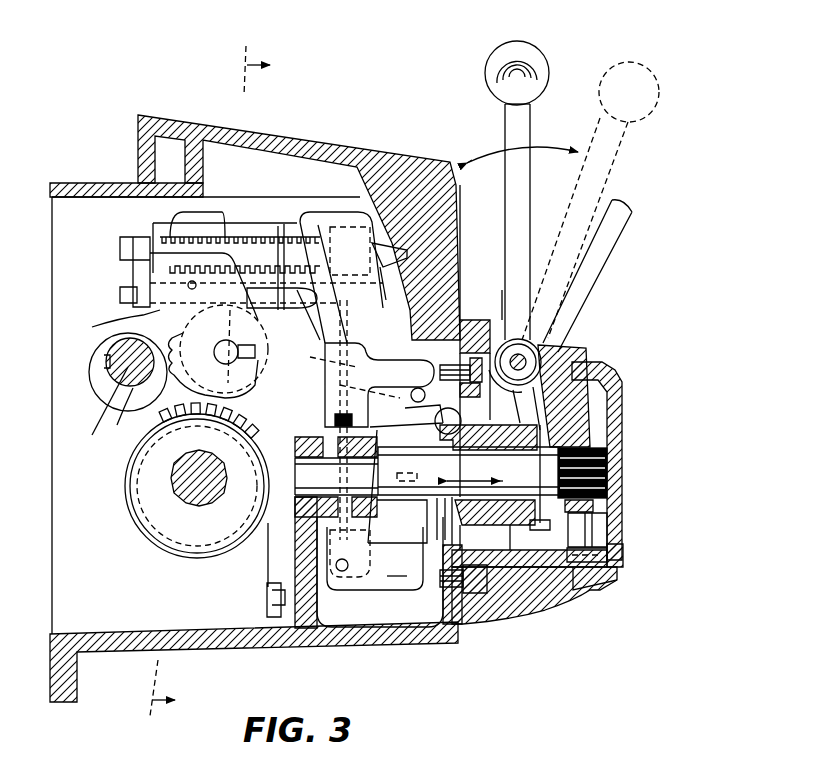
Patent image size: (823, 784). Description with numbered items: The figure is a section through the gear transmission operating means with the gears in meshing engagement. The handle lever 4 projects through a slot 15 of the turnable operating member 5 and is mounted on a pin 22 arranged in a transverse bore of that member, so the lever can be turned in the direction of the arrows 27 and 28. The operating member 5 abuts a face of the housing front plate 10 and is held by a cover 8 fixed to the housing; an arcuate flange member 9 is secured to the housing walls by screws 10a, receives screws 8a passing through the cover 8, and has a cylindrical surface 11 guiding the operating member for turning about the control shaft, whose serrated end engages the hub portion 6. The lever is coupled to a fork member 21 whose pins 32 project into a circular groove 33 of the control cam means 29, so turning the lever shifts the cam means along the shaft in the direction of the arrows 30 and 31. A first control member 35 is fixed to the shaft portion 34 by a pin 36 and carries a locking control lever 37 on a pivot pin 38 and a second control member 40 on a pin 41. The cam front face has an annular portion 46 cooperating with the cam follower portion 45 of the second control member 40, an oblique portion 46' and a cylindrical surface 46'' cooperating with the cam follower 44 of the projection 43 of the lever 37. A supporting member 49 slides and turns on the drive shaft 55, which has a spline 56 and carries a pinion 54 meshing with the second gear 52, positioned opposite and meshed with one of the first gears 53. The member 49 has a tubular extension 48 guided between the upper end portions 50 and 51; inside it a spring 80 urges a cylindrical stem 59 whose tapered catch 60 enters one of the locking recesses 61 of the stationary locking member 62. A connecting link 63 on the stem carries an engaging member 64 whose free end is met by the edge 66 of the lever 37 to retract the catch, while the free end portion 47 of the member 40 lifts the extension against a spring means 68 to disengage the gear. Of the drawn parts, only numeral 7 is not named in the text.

The handle lever 4 is at (553, 192).
The arrow 27 is at (563, 201).
The arrow 28 is at (456, 148).
The slot 15 is at (575, 334).
The pin 22 is at (528, 360).
The housing front plate 10 is at (449, 273).
The screws 10a is at (441, 594).
The cylindrical surface 11 is at (467, 338).
The locking recesses 61 is at (407, 254).
The catch 60 is at (386, 275).
The fork member 21 is at (622, 420).
The control cam means 29 is at (481, 454).
The second control member 40 is at (420, 454).
The portion of control shaft 34 is at (324, 486).
The arrow 30 is at (460, 483).
The arrow 31 is at (513, 483).
The pin 41 is at (414, 421).
The spring 7 is at (607, 470).
The hub portion 6 is at (593, 508).
The circular groove 33 is at (607, 522).
The pins 32 is at (542, 529).
The arcuate flange member 9 is at (497, 565).
The operating member 5 is at (570, 608).
The cover 8 is at (601, 581).
The screws 8a is at (623, 552).
The locking control lever 37 is at (374, 343).
The cam follower projection 43 is at (448, 421).
The cam follower 44 is at (463, 416).
The pin 36 is at (334, 418).
The tubular extension 48 is at (287, 224).
The spring 80 is at (240, 223).
The cylindrical stem 59 is at (266, 285).
The upper end portion 50 is at (281, 226).
The upper end portion 51 is at (313, 212).
The free end portion 47 is at (304, 322).
The stationary locking member 62 is at (385, 316).
The edge 66 is at (320, 320).
The connecting link 63 is at (130, 265).
The engaging member 64 is at (127, 288).
The second gear 52 is at (219, 351).
The spline 56 is at (106, 364).
The drive shaft 55 is at (94, 420).
The pinion 54 is at (118, 412).
The supporting member 49 is at (92, 327).
The first gears 53 is at (162, 486).
The spring means 68 is at (266, 579).
The pivot pin 38 is at (355, 555).
The first control member 35 is at (396, 567).
The cam follower portion 45 is at (420, 507).
The annular inner portion 46 is at (433, 519).
The oblique portion 46' is at (473, 537).
The cylindrical outer surface 46'' is at (520, 537).